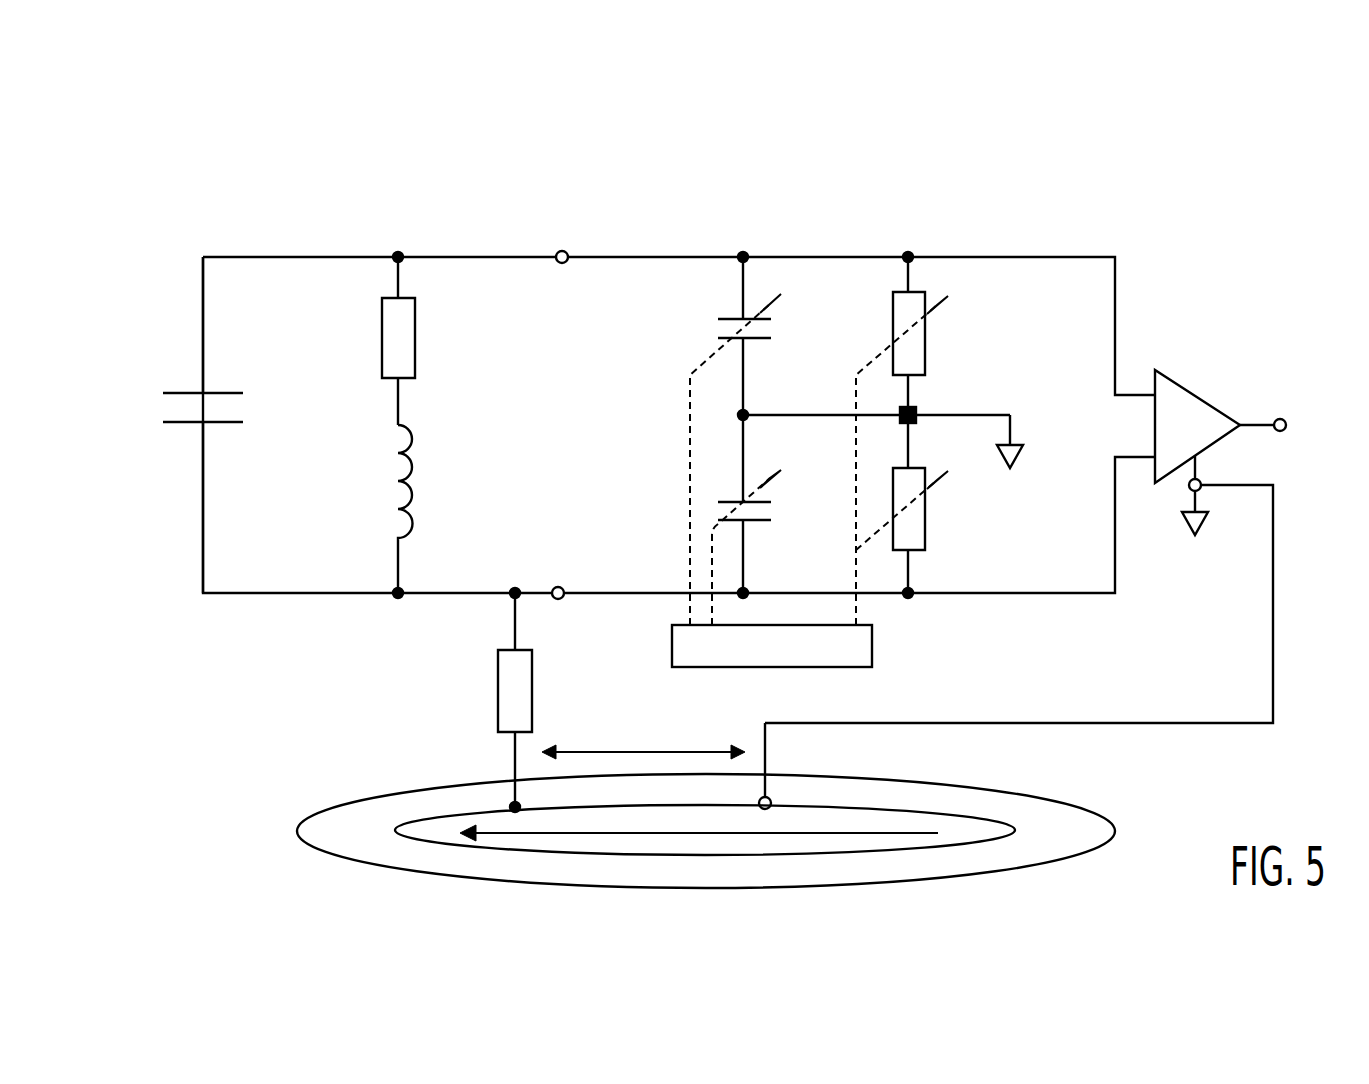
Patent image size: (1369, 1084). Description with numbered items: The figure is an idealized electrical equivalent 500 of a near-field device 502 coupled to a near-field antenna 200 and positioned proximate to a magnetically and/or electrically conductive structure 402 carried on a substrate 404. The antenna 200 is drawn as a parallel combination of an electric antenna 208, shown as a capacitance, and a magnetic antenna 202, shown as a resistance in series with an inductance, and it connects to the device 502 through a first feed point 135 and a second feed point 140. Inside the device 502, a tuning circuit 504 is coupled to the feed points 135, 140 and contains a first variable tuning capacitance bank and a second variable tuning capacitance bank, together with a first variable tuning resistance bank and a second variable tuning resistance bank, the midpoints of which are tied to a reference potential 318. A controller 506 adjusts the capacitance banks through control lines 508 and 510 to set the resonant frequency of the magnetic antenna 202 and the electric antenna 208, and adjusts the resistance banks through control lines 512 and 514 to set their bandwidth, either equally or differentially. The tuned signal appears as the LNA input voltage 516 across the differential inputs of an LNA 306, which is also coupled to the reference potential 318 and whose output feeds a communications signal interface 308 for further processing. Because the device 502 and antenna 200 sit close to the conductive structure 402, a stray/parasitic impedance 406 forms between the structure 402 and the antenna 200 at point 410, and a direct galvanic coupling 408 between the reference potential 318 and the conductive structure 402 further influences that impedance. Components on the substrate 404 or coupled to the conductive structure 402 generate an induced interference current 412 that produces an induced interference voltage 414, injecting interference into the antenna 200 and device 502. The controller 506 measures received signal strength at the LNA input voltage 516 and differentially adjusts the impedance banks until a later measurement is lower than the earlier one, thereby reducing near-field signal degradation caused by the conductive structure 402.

The idealized electrical equivalent 500 is at (118, 176).
The near-field antenna 200 is at (565, 156).
The electric antenna 208 is at (163, 230).
The magnetic antenna 202 is at (490, 230).
The first feed point 135 is at (562, 263).
The second feed point 140 is at (558, 587).
The near-field device 502 is at (1283, 156).
The tuning circuit 504 is at (952, 230).
The controller 506 is at (872, 645).
The control line 508 is at (690, 440).
The control line 510 is at (712, 603).
The control line 512 is at (856, 396).
The control line 514 is at (856, 605).
The Vlna 516 is at (1077, 430).
The LNA 306 is at (1185, 378).
The communications signal interface 308 is at (1281, 416).
The reference potential 318 is at (1010, 430).
The direct galvanic coupling 408 is at (1275, 600).
The point 410 is at (515, 587).
The stray/parasitic impedance 406 is at (498, 676).
The induced interference voltage 414 is at (745, 748).
The induced interference current 412 is at (850, 833).
The conductive structure 402 is at (965, 812).
The substrate 404 is at (1100, 825).